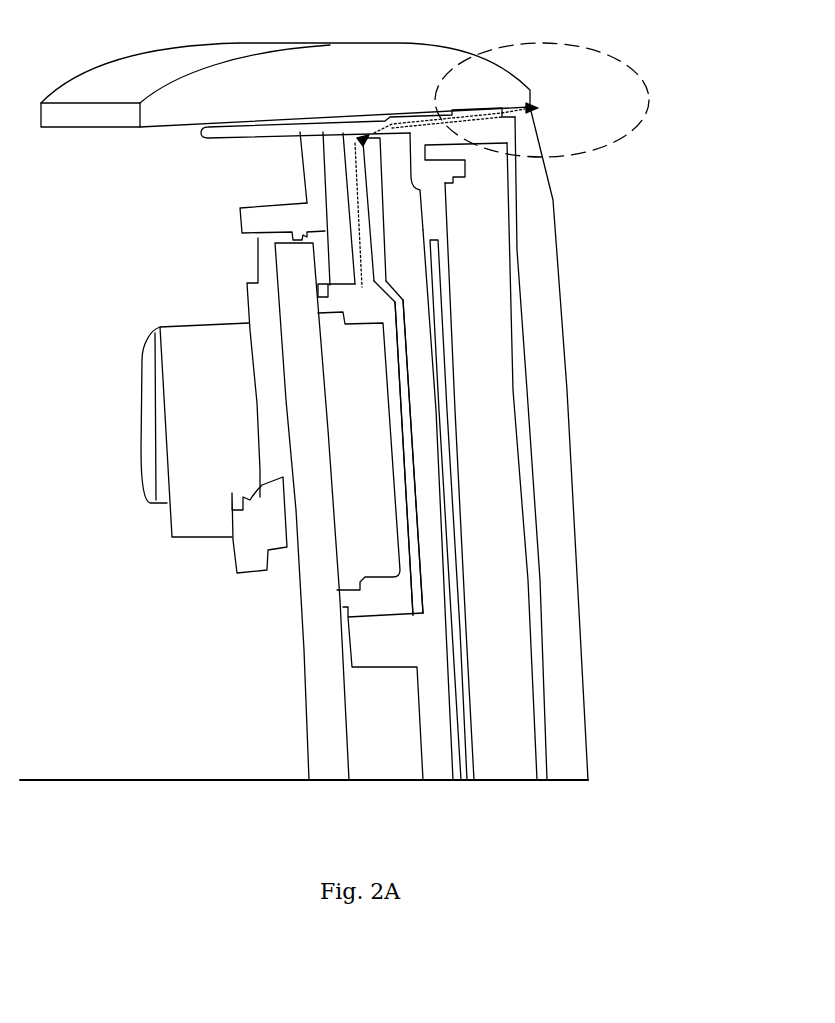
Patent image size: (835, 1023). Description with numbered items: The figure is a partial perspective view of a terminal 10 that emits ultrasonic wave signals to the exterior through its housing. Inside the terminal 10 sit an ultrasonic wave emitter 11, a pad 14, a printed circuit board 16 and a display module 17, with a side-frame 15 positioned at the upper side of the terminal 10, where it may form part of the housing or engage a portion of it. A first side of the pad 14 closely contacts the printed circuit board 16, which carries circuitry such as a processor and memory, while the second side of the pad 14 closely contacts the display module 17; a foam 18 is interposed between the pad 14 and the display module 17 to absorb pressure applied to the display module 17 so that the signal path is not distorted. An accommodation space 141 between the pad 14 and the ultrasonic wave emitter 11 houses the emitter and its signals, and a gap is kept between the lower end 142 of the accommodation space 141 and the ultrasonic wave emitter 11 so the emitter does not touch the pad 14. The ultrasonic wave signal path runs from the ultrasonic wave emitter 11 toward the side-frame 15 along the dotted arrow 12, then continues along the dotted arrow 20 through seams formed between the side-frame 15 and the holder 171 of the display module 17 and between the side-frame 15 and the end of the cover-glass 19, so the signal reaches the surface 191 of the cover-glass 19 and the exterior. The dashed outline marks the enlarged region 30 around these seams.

The terminal 10 is at (616, 256).
The ultrasonic wave emitter 11 is at (377, 560).
The dotted arrow 12 is at (362, 240).
The pad 14 is at (432, 698).
The accommodation space 141 is at (403, 502).
The lower end of the accommodation space 142 is at (412, 448).
The side-frame 15 is at (467, 75).
The printed circuit board 16 is at (325, 755).
The display module 17 is at (480, 605).
The holder 171 is at (482, 137).
The foam 18 is at (463, 722).
The cover-glass 19 is at (542, 400).
The surface of the cover-glass 191 is at (563, 372).
The dotted arrow 20 is at (510, 123).
The enlarged region 30 is at (600, 85).